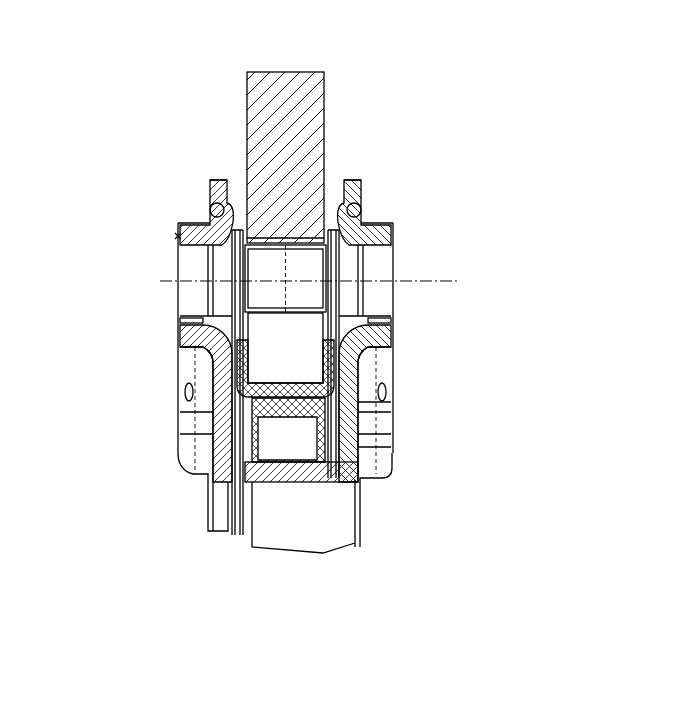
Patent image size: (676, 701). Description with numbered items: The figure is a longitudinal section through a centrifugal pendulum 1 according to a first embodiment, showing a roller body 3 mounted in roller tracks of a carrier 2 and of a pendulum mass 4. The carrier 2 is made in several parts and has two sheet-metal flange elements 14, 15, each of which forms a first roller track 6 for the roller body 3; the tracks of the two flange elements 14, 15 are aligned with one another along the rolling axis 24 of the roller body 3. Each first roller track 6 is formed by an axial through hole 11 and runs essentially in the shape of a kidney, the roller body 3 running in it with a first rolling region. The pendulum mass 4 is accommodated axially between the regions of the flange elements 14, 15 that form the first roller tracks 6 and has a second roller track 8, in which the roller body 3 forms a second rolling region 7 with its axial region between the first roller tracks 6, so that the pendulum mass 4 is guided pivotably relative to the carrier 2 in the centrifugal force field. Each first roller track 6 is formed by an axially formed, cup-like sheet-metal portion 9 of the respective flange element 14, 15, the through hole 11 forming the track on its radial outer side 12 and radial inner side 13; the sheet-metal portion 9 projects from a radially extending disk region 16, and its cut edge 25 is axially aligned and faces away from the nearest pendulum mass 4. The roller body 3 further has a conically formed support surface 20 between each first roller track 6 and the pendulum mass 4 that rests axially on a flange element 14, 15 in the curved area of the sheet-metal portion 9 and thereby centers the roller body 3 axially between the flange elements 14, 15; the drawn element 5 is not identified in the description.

The centrifugal pendulum 1 is at (112, 125).
The carrier 2 is at (220, 485).
The roller body 3 is at (305, 275).
The pendulum mass 4 is at (295, 80).
The housing wall 5 is at (193, 266).
The first roller track 6 is at (201, 249).
The second rolling region 7 is at (265, 302).
The second roller track 8 is at (306, 300).
The sheet-metal portion 9 is at (170, 345).
The through hole 11 is at (170, 320).
The radial outer side 12 is at (185, 215).
The radial inner side 13 is at (176, 347).
The first flange element 14 is at (227, 422).
The second flange element 15 is at (353, 447).
The disk region 16 is at (222, 388).
The support surface 20 is at (224, 214).
The rolling axis 24 is at (160, 277).
The cut edge 25 is at (177, 235).